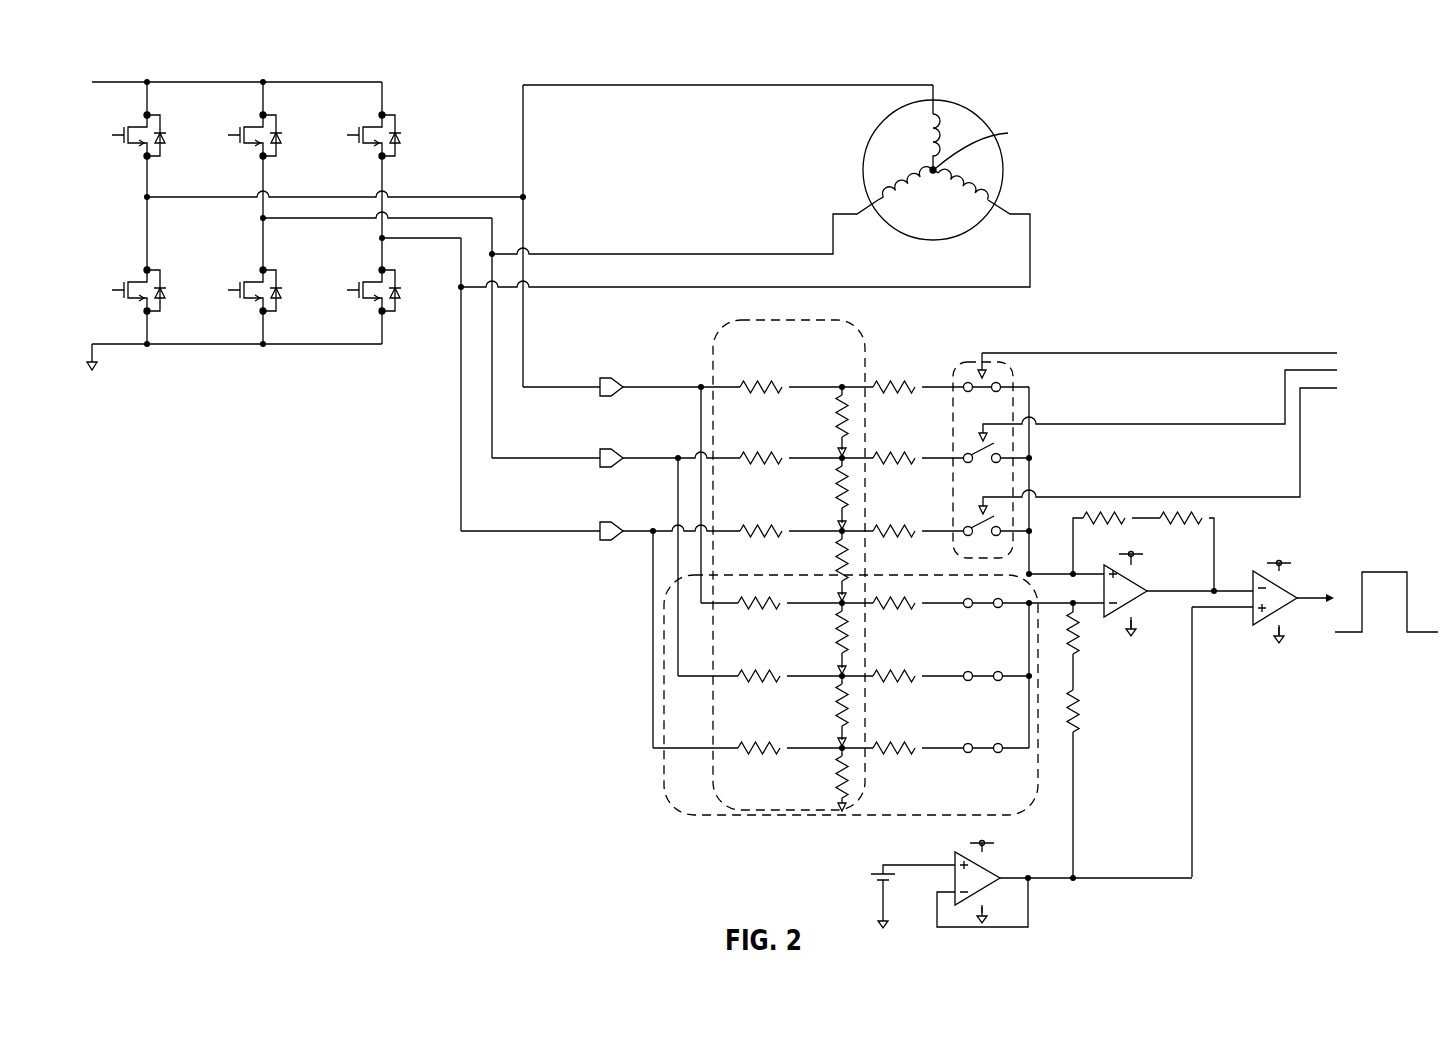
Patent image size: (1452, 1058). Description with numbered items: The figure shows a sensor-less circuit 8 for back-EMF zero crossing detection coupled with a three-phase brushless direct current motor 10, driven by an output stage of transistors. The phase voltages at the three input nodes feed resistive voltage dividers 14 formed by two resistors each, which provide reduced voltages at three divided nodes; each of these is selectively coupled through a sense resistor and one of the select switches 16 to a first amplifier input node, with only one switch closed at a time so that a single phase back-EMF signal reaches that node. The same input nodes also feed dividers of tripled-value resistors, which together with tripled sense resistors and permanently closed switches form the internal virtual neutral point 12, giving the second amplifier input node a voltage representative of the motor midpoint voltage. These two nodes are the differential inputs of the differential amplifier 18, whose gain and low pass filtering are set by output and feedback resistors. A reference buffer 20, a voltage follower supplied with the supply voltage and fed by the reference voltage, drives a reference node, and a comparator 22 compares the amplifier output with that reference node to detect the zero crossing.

The sensor-less circuit 8 is at (330, 642).
The three-phase brushless direct current motor 10 is at (962, 107).
The internal virtual neutral point 12 is at (680, 809).
The resistive voltage dividers 14 is at (712, 647).
The select switches 16 is at (988, 360).
The differential amplifier 18 is at (1137, 597).
The reference buffer 20 is at (990, 886).
The comparator 22 is at (1288, 606).